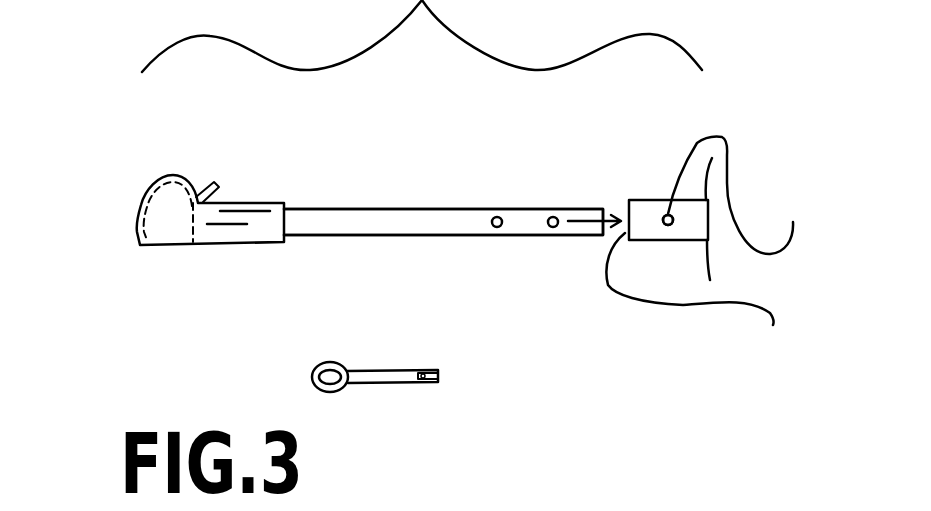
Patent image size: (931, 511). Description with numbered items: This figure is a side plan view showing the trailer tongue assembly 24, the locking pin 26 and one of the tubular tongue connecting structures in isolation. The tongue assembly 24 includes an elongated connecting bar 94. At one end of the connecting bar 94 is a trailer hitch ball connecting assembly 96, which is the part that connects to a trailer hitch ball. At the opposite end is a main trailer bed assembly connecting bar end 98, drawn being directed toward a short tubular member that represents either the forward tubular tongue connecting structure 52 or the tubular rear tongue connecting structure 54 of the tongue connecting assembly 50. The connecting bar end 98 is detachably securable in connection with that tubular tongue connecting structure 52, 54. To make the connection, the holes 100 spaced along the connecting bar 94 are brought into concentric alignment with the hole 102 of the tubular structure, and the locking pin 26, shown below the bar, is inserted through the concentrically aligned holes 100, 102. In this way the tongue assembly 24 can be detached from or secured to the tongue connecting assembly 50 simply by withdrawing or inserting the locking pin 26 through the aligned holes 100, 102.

The tongue assembly 24 is at (322, 239).
The locking pin 26 is at (365, 380).
The tongue connecting assembly 50 is at (645, 193).
The forward tubular tongue connecting structure 52 is at (649, 305).
The tubular rear tongue connecting structure 54 is at (445, 377).
The elongated connecting bar 94 is at (392, 219).
The trailer hitch ball connecting assembly 96 is at (155, 174).
The main trailer bed assembly connecting bar end 98 is at (525, 213).
The holes 100 is at (497, 227).
The holes 102 is at (725, 231).